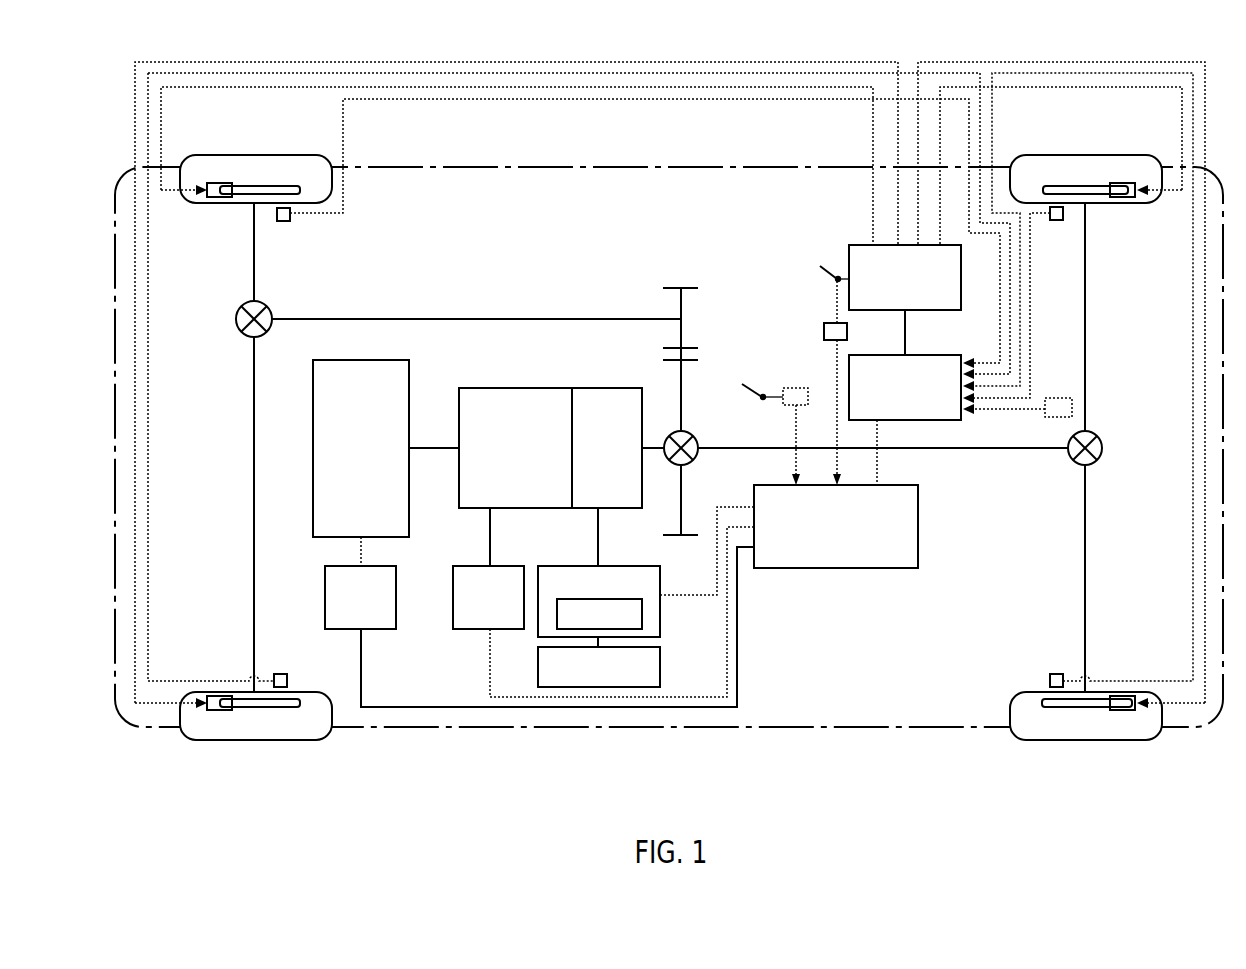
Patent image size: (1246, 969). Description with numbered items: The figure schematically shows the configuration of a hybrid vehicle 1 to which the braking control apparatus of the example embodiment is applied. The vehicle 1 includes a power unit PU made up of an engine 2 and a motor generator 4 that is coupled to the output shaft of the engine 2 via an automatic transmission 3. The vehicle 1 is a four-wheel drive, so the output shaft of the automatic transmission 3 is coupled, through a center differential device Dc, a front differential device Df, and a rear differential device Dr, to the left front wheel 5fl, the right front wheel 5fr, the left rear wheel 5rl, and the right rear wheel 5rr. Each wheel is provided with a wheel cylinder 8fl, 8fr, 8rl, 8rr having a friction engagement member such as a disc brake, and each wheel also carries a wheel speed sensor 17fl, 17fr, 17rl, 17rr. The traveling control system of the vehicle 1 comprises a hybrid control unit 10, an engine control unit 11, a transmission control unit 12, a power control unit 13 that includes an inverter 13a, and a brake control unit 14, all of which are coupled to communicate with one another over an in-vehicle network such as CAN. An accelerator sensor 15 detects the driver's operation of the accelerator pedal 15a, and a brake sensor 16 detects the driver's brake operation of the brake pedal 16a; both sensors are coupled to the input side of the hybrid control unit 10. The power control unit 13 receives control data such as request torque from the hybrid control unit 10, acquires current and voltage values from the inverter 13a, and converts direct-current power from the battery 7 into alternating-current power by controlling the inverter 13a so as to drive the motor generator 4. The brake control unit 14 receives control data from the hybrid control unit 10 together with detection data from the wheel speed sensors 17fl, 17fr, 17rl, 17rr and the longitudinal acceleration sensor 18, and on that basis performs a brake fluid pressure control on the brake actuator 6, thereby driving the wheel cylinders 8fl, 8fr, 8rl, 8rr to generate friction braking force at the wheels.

The vehicle 1 is at (597, 162).
The engine 2 is at (409, 362).
The automatic transmission 3 is at (533, 388).
The motor generator 4 is at (611, 388).
The power unit PU is at (550, 415).
The right front wheel 5fr is at (262, 155).
The left front wheel 5fl is at (260, 740).
The right rear wheel 5rr is at (1080, 155).
The left rear wheel 5rl is at (1030, 740).
The brake actuator 6 is at (962, 270).
The battery 7 is at (660, 668).
The wheel cylinder 8fr is at (217, 183).
The wheel cylinder 8fl is at (215, 712).
The wheel cylinder 8rr is at (1122, 183).
The wheel cylinder 8rl is at (1068, 712).
The hybrid control unit 10 is at (918, 502).
The engine control unit 11 is at (396, 577).
The transmission control unit 12 is at (453, 618).
The power control unit 13 is at (646, 577).
The inverter 13a is at (642, 615).
The brake control unit 14 is at (945, 355).
The accelerator sensor 15 is at (795, 388).
The accelerator pedal 15a is at (748, 383).
The brake sensor 16 is at (824, 328).
The brake pedal 16a is at (822, 268).
The wheel speed sensor 17fr is at (284, 222).
The wheel speed sensor 17fl is at (283, 674).
The wheel speed sensor 17rr is at (1057, 221).
The wheel speed sensor 17rl is at (1058, 674).
The longitudinal acceleration sensor 18 is at (1058, 398).
The front differential device Df is at (240, 332).
The center differential device Dc is at (695, 460).
The rear differential device Dr is at (1095, 437).